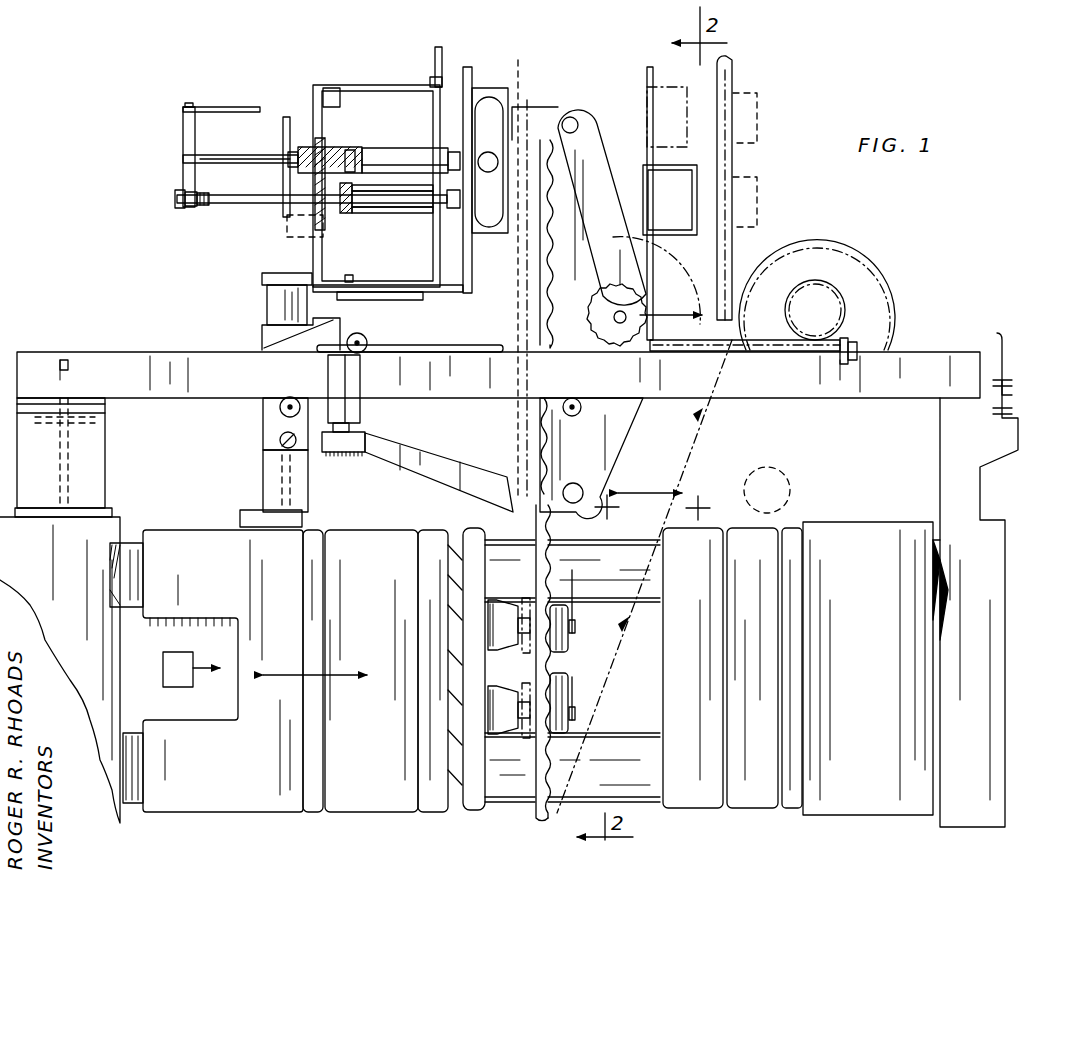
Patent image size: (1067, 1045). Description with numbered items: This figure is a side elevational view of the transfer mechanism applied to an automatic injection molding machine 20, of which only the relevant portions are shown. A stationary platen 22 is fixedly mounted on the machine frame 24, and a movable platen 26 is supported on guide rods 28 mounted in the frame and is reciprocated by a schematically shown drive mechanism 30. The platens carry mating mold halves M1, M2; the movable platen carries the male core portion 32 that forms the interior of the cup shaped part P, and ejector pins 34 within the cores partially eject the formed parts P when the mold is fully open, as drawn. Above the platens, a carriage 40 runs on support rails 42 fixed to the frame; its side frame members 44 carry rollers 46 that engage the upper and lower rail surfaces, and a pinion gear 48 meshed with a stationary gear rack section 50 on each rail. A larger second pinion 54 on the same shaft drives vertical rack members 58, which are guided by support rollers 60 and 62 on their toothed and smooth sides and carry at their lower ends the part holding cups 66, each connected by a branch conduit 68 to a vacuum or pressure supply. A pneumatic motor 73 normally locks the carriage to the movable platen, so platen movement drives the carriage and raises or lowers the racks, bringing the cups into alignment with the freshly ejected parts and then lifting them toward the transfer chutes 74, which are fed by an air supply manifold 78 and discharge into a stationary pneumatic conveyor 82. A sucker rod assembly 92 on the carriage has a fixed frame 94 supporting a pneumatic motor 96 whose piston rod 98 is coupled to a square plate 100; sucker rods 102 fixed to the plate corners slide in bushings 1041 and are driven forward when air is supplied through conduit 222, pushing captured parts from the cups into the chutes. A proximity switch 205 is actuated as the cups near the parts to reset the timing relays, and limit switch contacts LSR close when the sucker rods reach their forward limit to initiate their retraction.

The molding machine 20 is at (884, 518).
The stationary platen 22 is at (873, 664).
The machine frame 24 is at (988, 730).
The movable platen 26 is at (266, 800).
The guide rods 28 is at (128, 558).
The drive mechanism 30 is at (178, 660).
The core portion 32 is at (528, 585).
The ejector pins 34 is at (535, 624).
The carriage 40 is at (560, 105).
The support rails 42 is at (763, 386).
The side frame members 44 is at (460, 474).
The rollers 46 is at (347, 347).
The pinion gear 48 is at (642, 310).
The gear rack section 50 is at (762, 336).
The second pinion 54 is at (589, 267).
The vertical rack members 58 is at (730, 160).
The support rollers 60 is at (596, 120).
The support rollers 62 is at (514, 100).
The part holding cups 66 is at (760, 104).
The branch conduits 68 is at (576, 588).
The pneumatic motor 73 is at (265, 302).
The transfer chutes 74 is at (485, 100).
The air supply manifold 78 is at (476, 101).
The pneumatic conveyor 82 is at (638, 166).
The sucker rod assembly 92 is at (357, 80).
The fixed frame 94 is at (332, 90).
The pneumatic motor 96 is at (380, 157).
The piston rod 98 is at (290, 155).
The square plate 100 is at (186, 136).
The sucker rod 102 is at (256, 202).
The proximity switch 205 is at (372, 426).
The conduit 222 is at (306, 146).
The bushing 1041 is at (326, 222).
The limit switch contacts LSR is at (281, 20).
The mold half M1 is at (422, 798).
The mold half M2 is at (698, 792).
The cup shaped part P is at (531, 582).